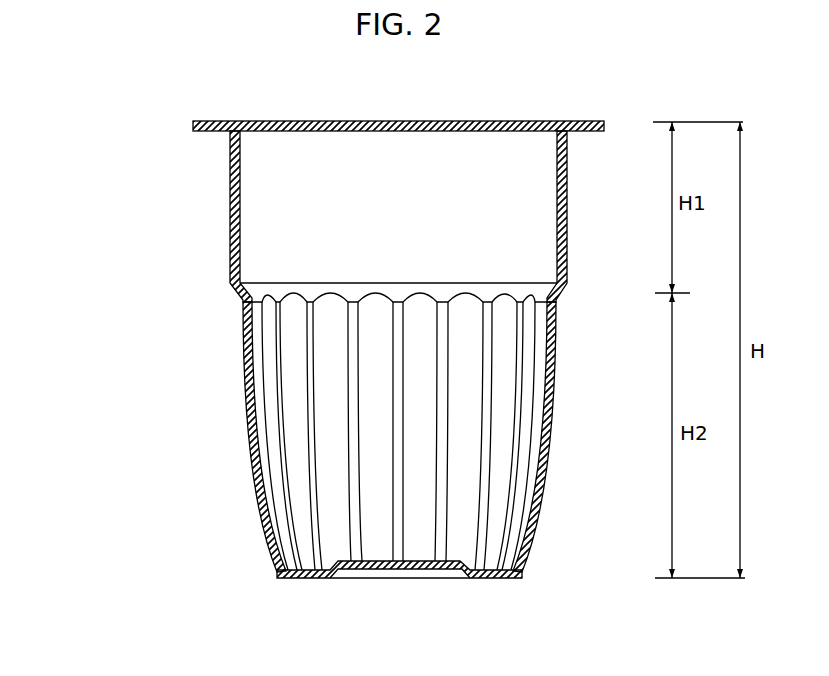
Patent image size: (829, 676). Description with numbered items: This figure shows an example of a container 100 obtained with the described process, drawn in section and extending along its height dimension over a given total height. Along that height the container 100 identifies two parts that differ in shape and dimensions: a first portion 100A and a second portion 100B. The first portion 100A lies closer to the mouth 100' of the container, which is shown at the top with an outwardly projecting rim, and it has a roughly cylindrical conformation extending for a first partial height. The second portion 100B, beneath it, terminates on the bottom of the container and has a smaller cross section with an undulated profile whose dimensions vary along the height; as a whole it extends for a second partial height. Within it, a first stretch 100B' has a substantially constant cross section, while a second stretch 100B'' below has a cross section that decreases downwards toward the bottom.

The container 100 is at (332, 356).
The first portion 100A is at (223, 193).
The mouth 100' is at (398, 113).
The second portion 100B is at (373, 468).
The first stretch 100B' is at (438, 437).
The second stretch 100B'' is at (399, 468).